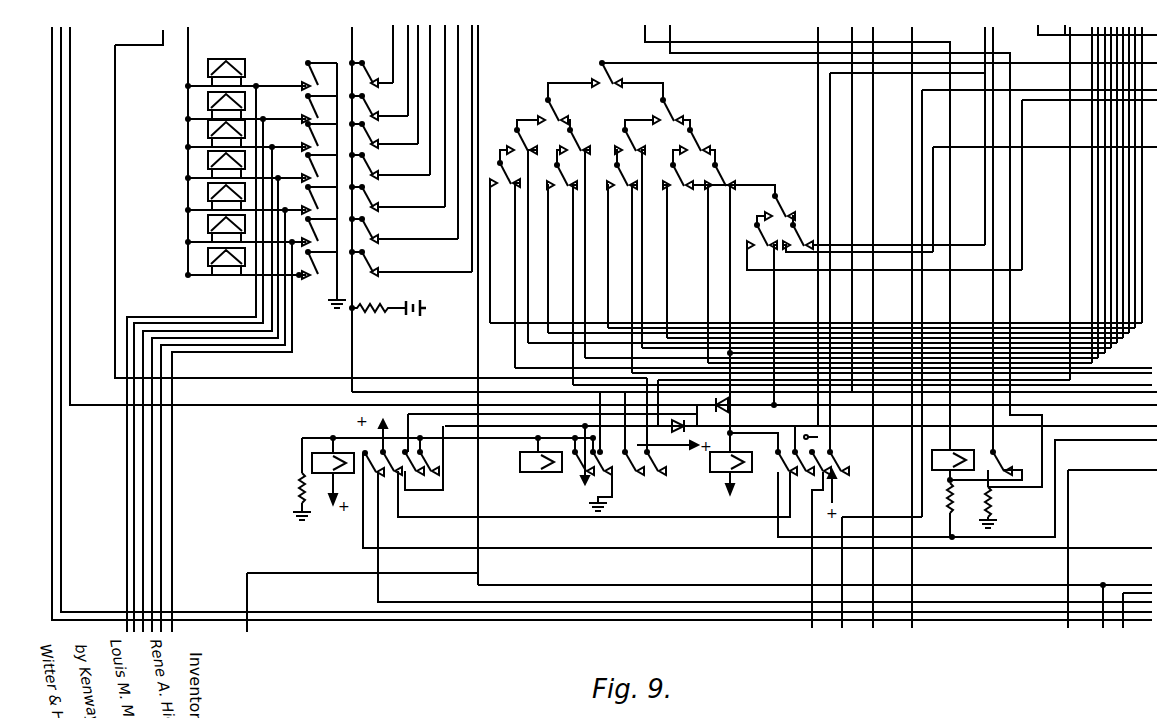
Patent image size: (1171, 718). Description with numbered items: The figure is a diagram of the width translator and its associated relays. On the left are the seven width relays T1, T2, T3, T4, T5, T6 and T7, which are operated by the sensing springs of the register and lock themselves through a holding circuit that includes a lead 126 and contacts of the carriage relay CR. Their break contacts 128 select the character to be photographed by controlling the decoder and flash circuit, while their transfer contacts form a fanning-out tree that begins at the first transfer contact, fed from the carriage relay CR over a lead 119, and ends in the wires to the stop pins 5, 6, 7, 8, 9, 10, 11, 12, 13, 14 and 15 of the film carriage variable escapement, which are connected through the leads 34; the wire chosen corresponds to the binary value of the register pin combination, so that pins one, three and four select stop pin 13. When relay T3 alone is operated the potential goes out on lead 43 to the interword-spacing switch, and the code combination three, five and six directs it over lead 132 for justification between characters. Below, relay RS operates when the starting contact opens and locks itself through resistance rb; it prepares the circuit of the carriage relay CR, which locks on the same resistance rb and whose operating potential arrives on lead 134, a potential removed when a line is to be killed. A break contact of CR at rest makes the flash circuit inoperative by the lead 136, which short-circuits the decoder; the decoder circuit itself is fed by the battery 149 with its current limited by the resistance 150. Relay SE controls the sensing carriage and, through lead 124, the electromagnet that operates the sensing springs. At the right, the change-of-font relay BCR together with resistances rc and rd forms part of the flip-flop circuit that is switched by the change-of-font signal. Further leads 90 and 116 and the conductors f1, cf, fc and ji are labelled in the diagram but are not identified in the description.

The break contacts 128 is at (372, 70).
The lead 119 is at (740, 66).
The lead 126 is at (850, 146).
The lead 124 is at (910, 146).
The lead 132 is at (1056, 102).
The lead 43 is at (1050, 150).
The leads 34 is at (1048, 380).
The battery 149 is at (405, 299).
The resistance 150 is at (377, 319).
The lead 136 is at (392, 392).
The lead 134 is at (520, 476).
The conductor 90 is at (511, 587).
The conductor 116 is at (1096, 471).
The relay T1 is at (228, 74).
The relay T2 is at (228, 107).
The relay T3 is at (228, 135).
The relay T4 is at (228, 166).
The relay T5 is at (228, 198).
The relay T6 is at (228, 230).
The relay T7 is at (228, 263).
The stop pin wire 5 is at (570, 285).
The stop pin wire 6 is at (628, 279).
The stop pin wire 7 is at (512, 275).
The stop pin wire 8 is at (711, 274).
The stop pin wire 9 is at (661, 301).
The stop pin wire 10 is at (651, 249).
The stop pin wire 11 is at (535, 246).
The stop pin wire 12 is at (673, 261).
The stop pin wire 13 is at (554, 259).
The stop pin wire 14 is at (603, 256).
The stop pin wire 15 is at (497, 253).
The conductor f1 is at (775, 326).
The conductor cf is at (899, 242).
The conductor fc is at (872, 263).
The conductor ji is at (968, 139).
The relay RS is at (333, 462).
The resistance rb is at (289, 479).
The carriage relay CR is at (520, 465).
The relay SE is at (734, 463).
The relay BCF BCR is at (948, 457).
The resistance rc is at (967, 508).
The resistance rd is at (1000, 488).